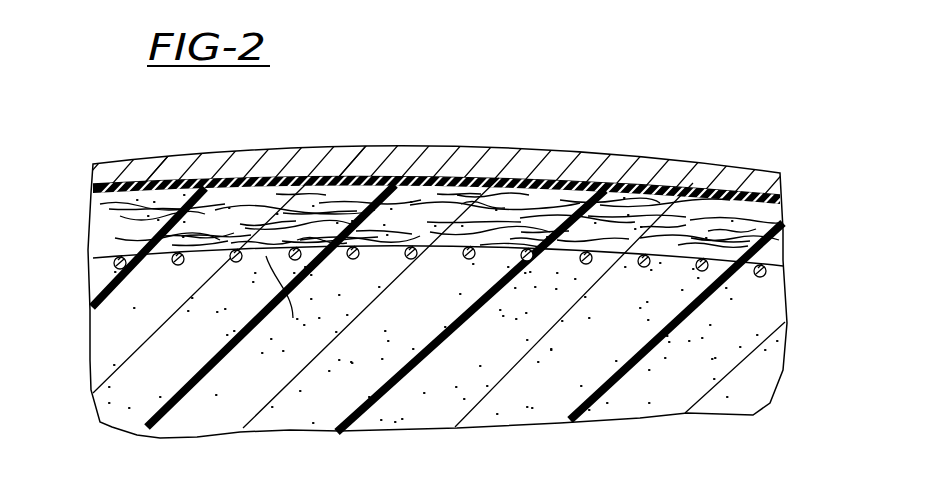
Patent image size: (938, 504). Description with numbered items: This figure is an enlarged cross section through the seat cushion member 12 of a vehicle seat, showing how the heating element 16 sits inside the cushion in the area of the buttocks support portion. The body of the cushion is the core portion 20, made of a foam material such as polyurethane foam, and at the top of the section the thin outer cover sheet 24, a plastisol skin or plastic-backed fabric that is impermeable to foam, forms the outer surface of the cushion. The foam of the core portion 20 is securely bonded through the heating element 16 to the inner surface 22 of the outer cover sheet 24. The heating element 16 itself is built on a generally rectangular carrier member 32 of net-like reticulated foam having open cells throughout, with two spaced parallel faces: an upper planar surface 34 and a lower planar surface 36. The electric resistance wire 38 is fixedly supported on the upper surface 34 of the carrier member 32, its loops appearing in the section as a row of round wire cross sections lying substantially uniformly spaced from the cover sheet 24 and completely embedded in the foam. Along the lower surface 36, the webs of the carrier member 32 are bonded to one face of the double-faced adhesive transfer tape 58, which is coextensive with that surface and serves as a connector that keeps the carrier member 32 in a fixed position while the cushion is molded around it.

The seat cushion member 12 is at (662, 144).
The heating element 16 is at (94, 234).
The core portion 20 is at (128, 418).
The inner surface 22 is at (757, 196).
The outer cover sheet 24 is at (337, 168).
The carrier member 32 is at (262, 205).
The upper planar surface 34 is at (437, 308).
The lower planar surface 36 is at (442, 184).
The electric resistance wire 38 is at (123, 268).
The double-faced adhesive transfer tape 58 is at (131, 183).